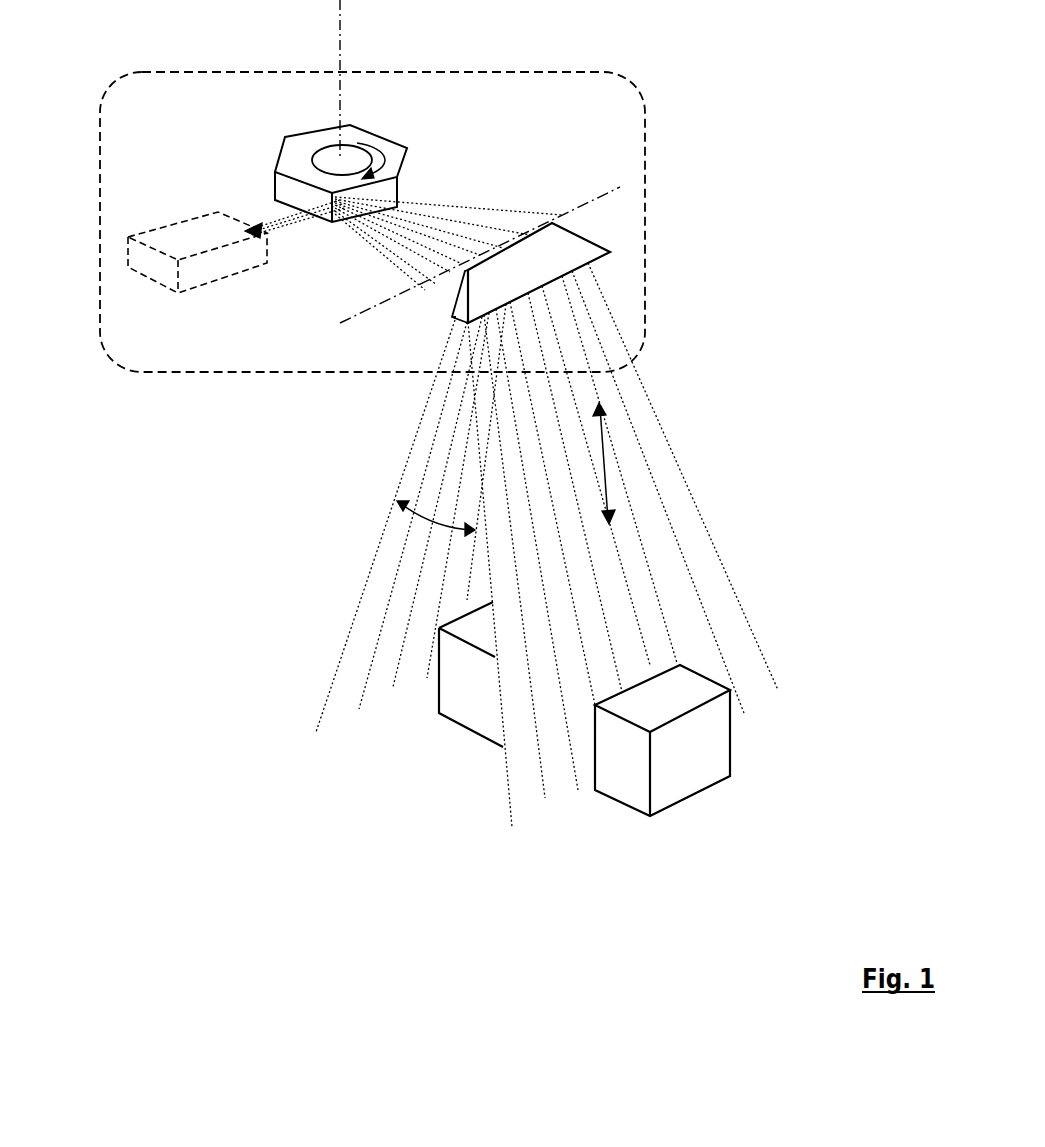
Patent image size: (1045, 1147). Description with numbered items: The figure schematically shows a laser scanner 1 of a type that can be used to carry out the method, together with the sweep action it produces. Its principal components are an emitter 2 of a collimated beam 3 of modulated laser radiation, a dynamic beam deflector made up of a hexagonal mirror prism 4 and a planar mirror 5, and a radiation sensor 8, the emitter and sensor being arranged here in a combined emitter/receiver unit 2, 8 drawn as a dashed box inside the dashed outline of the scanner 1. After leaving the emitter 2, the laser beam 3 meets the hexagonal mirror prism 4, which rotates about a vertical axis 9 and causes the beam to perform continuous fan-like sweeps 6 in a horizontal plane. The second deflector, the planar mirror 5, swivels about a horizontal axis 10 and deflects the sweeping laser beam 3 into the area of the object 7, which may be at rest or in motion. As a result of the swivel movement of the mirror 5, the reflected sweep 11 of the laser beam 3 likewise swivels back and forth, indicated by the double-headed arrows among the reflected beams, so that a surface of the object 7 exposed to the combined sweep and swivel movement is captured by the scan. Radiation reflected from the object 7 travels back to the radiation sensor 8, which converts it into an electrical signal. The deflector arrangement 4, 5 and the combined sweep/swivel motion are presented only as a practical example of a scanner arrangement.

The laser scanner 1 is at (662, 132).
The emitter 2 is at (151, 186).
The radiation sensor 8 is at (193, 240).
The collimated beam 3 is at (272, 232).
The hexagonal mirror prism 4 is at (380, 124).
The vertical axis 9 is at (343, 110).
The fan-shaped sweeps 6 is at (438, 222).
The planar mirror 5 is at (577, 233).
The horizontal axis 10 is at (405, 294).
The reflected sweep 11 is at (334, 685).
The object 7 is at (712, 750).